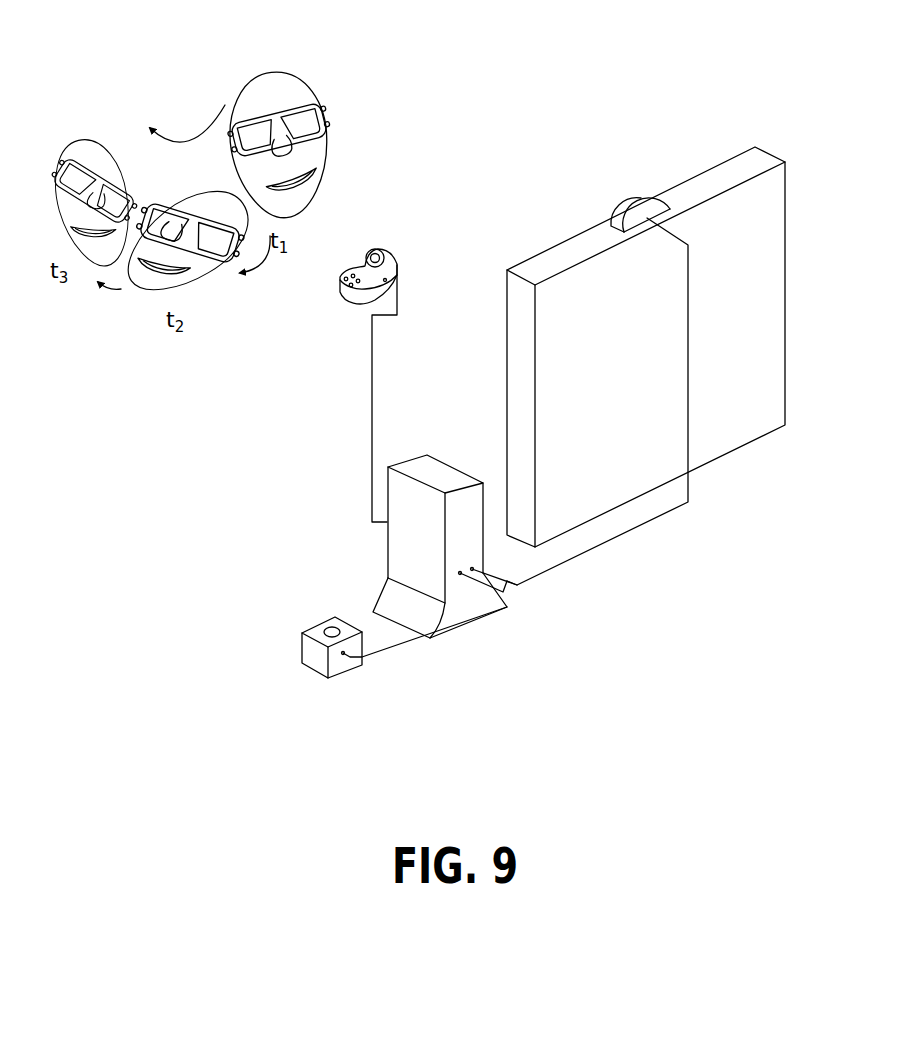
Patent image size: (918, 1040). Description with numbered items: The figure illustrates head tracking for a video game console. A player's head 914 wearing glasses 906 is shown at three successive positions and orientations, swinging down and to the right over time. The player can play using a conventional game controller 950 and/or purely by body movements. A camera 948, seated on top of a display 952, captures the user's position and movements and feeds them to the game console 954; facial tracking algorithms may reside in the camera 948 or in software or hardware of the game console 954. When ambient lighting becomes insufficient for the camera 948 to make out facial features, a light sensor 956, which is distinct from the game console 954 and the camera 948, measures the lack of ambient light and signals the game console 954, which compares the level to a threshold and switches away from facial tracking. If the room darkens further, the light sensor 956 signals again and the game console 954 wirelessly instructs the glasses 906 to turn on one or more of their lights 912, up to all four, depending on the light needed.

The player's head 914 is at (298, 70).
The glasses 906 is at (320, 98).
The lights 912 is at (333, 136).
The game controller 950 is at (401, 268).
The camera 948 is at (640, 197).
The display 952 is at (740, 448).
The game console 954 is at (485, 618).
The light sensor 956 is at (338, 678).